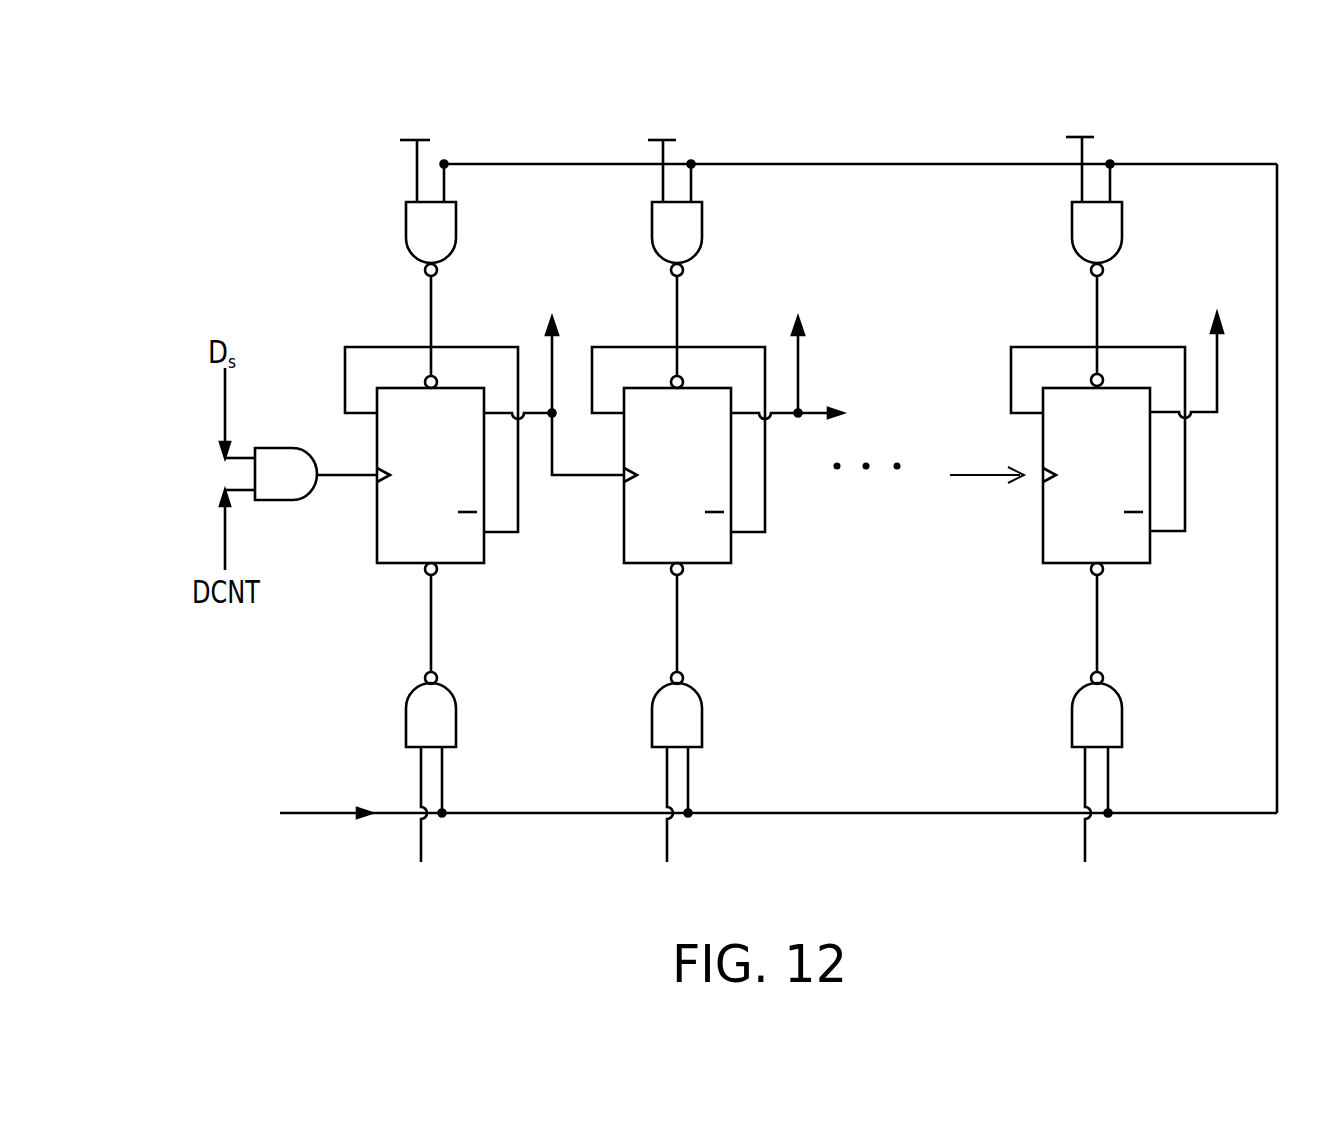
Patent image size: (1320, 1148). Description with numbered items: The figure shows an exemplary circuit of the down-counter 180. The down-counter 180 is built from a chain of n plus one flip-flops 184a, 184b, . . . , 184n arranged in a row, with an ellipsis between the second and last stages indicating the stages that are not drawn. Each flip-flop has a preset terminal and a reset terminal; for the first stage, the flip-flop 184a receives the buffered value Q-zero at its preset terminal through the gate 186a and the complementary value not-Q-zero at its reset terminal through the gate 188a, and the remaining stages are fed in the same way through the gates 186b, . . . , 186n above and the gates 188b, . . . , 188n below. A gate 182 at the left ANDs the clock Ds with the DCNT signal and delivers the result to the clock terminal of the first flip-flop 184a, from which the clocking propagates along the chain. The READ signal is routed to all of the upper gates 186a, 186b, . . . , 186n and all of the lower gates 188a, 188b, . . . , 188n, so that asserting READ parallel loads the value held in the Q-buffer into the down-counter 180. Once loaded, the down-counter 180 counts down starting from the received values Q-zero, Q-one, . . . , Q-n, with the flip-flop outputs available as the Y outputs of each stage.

The down-counter 180 is at (240, 191).
The gate 182 is at (275, 448).
The flip-flop 184a is at (377, 542).
The flip-flop 184b is at (624, 542).
The flip-flop 184n is at (1043, 542).
The gate 186a is at (406, 227).
The gate 186b is at (652, 227).
The gate 186n is at (1072, 227).
The gate 188a is at (406, 727).
The gate 188b is at (652, 727).
The gate 188n is at (1072, 727).